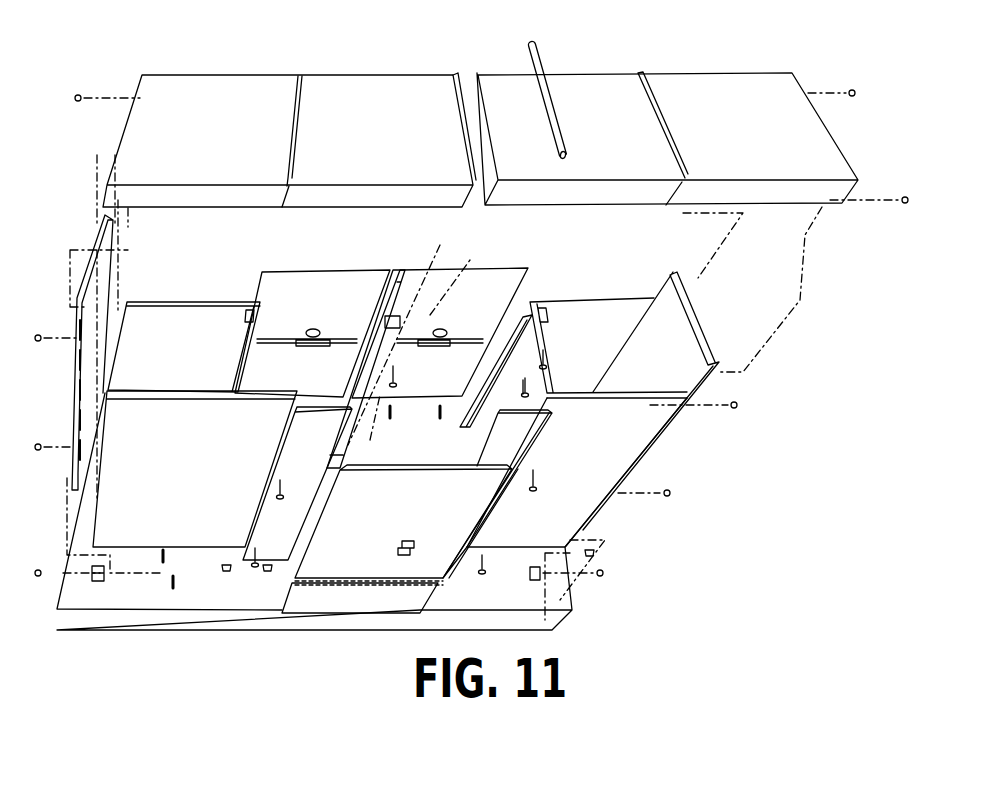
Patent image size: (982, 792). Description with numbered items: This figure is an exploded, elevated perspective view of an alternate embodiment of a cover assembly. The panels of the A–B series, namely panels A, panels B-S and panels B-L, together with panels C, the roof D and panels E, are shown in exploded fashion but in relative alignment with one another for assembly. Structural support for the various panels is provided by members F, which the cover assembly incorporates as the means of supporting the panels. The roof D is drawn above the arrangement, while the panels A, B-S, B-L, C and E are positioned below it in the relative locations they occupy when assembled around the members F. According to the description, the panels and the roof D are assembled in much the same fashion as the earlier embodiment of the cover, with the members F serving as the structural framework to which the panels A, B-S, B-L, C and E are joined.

The roof D is at (480, 124).
The panel A is at (395, 380).
The panel B-S is at (397, 348).
The panel C is at (381, 423).
The member F is at (429, 369).
The panel E is at (397, 483).
The panel B-L is at (390, 469).